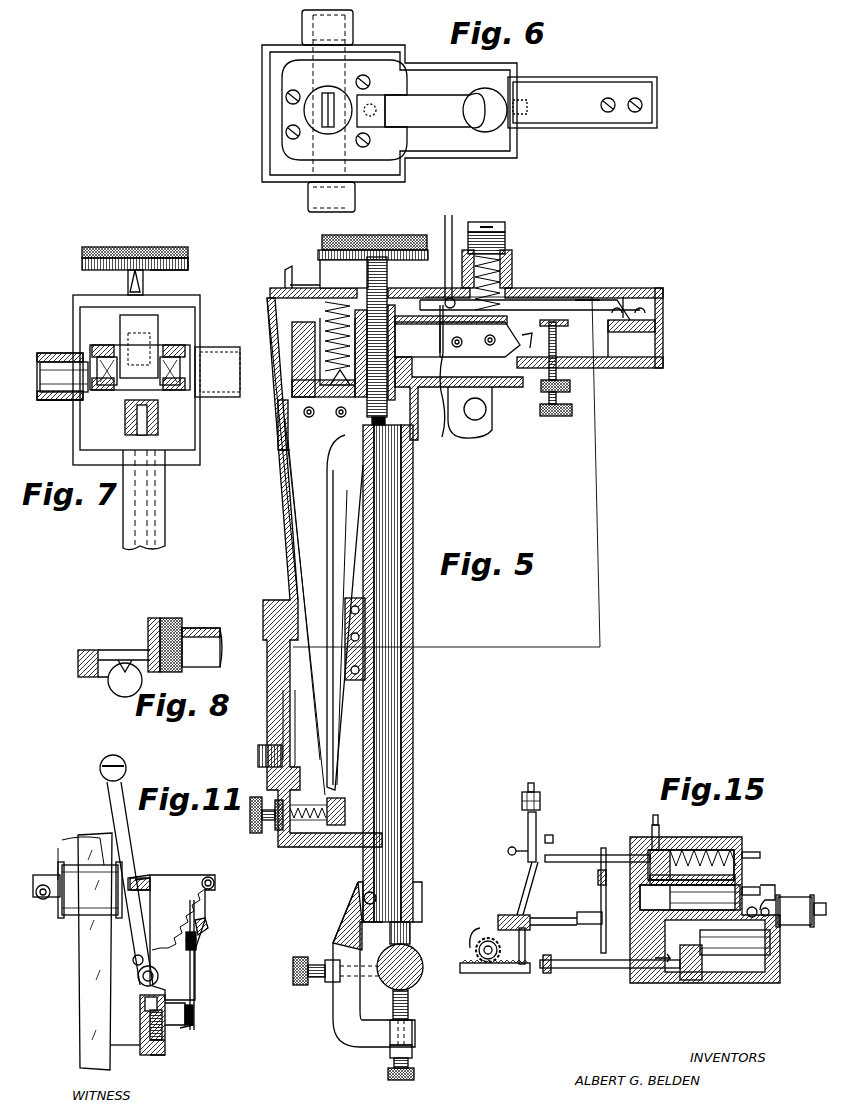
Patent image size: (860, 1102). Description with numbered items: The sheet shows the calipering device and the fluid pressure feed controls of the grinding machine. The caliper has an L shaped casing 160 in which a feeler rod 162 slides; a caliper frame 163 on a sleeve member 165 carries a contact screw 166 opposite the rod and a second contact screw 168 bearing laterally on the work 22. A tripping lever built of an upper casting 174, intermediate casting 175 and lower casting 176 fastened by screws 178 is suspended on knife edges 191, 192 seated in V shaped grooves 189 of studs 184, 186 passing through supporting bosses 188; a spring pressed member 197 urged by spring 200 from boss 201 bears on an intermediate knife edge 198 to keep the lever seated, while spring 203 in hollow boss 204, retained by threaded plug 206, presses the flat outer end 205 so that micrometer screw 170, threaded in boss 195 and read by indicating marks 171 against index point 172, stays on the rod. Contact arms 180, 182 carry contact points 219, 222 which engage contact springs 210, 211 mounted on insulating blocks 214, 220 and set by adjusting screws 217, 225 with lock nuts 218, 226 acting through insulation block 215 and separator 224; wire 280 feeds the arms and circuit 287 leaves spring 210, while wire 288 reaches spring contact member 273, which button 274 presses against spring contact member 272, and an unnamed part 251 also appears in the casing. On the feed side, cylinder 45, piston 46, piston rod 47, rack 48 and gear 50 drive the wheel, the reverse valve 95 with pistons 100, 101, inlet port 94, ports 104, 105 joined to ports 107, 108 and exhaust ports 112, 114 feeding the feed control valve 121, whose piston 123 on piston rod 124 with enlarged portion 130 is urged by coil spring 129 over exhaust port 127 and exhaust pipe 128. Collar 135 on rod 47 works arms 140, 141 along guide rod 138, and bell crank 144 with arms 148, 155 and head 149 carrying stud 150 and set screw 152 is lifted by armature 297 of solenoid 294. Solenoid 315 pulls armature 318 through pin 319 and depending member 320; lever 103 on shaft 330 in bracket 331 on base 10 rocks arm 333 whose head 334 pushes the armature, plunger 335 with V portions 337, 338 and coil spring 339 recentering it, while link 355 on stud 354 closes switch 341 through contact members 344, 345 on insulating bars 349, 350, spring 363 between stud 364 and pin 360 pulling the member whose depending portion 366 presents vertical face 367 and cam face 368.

In FIG. 11, the base 10 is at (88, 1045).
In FIG. 5, the work 22 is at (408, 972).
In FIG. 15, the wheel feed cylinder 45 is at (750, 983).
In FIG. 15, the piston 46 is at (688, 980).
In FIG. 15, the piston rod 47 is at (608, 968).
In FIG. 15, the rack 48 is at (508, 968).
In FIG. 15, the gear 50 is at (472, 945).
In FIG. 15, the port 94 is at (655, 897).
In FIG. 15, the reverse valve 95 is at (748, 888).
In FIG. 15, the piston 100 is at (688, 899).
In FIG. 15, the piston 101 is at (752, 913).
In FIG. 11, the lever 103 is at (112, 792).
In FIG. 15, the port 104 is at (630, 915).
In FIG. 15, the port 105 is at (710, 925).
In FIG. 15, the port 107 is at (750, 938).
In FIG. 15, the port 108 is at (660, 951).
In FIG. 15, the exhaust port 112 is at (598, 875).
In FIG. 15, the exhaust port 114 is at (742, 878).
In FIG. 15, the feed control valve 121 is at (732, 845).
In FIG. 15, the piston 123 is at (665, 855).
In FIG. 15, the piston rod 124 is at (760, 852).
In FIG. 15, the exhaust port 127 is at (652, 840).
In FIG. 15, the exhaust pipe 128 is at (655, 815).
In FIG. 15, the coil spring 129 is at (695, 852).
In FIG. 15, the enlarged portion 130 is at (640, 853).
In FIG. 15, the collar 135 is at (548, 973).
In FIG. 15, the guide rod 138 is at (556, 910).
In FIG. 15, the depending arm 140 is at (603, 948).
In FIG. 15, the upstanding arm 141 is at (601, 884).
In FIG. 15, the bell crank 144 is at (505, 915).
In FIG. 15, the arm 148 is at (527, 882).
In FIG. 15, the head 149 is at (528, 840).
In FIG. 15, the stud 150 is at (550, 837).
In FIG. 15, the set screw 152 is at (508, 852).
In FIG. 15, the depending arm 155 is at (525, 945).
In FIG. 5, the casing 160 is at (290, 562).
In FIG. 5, the feeler rod 162 is at (395, 703).
In FIG. 5, the caliper frame 163 is at (348, 910).
In FIG. 5, the sleeve member 165 is at (382, 860).
In FIG. 5, the contact screw 166 is at (388, 1073).
In FIG. 5, the contact screw 168 is at (293, 971).
In FIG. 7, the micrometer screw 170 is at (134, 247).
In FIG. 5, the micrometer screw 170 is at (385, 228).
In FIG. 7, the indicating marks 171 is at (168, 270).
In FIG. 5, the indicating marks 171 is at (402, 256).
In FIG. 7, the index point 172 is at (128, 285).
In FIG. 5, the index point 172 is at (300, 273).
In FIG. 5, the upper casting 174 is at (292, 330).
In FIG. 5, the intermediate casting 175 is at (292, 348).
In FIG. 8, the intermediate casting 175 is at (78, 660).
In FIG. 5, the lower casting 176 is at (300, 378).
In FIG. 6, the screws 178 is at (364, 78).
In FIG. 5, the contact arm 180 is at (470, 348).
In FIG. 7, the contact arm 182 is at (143, 445).
In FIG. 5, the contact arm 182 is at (310, 511).
In FIG. 6, the stud 184 is at (320, 30).
In FIG. 7, the stud 184 is at (62, 372).
In FIG. 8, the stud 184 is at (128, 688).
In FIG. 6, the stud 186 is at (335, 197).
In FIG. 7, the stud 186 is at (213, 372).
In FIG. 5, the stud 186 is at (304, 412).
In FIG. 6, the supporting bosses 188 is at (302, 41).
In FIG. 7, the supporting bosses 188 is at (55, 402).
In FIG. 5, the supporting bosses 188 is at (336, 412).
In FIG. 8, the V shaped groove 189 is at (118, 678).
In FIG. 7, the knife edge 191 is at (107, 368).
In FIG. 8, the knife edge 191 is at (125, 666).
In FIG. 7, the knife edge 192 is at (177, 365).
In FIG. 6, the boss 195 is at (373, 104).
In FIG. 5, the boss 195 is at (417, 339).
In FIG. 8, the boss 195 is at (182, 625).
In FIG. 5, the spring pressed member 197 is at (285, 425).
In FIG. 5, the intermediate knife edge 198 is at (282, 452).
In FIG. 5, the spring 200 is at (325, 318).
In FIG. 5, the boss 201 is at (353, 337).
In FIG. 5, the spring 203 is at (512, 272).
In FIG. 5, the hollow boss 204 is at (508, 250).
In FIG. 6, the flat outer end 205 is at (485, 115).
In FIG. 5, the flat outer end 205 is at (507, 310).
In FIG. 5, the threaded plug 206 is at (505, 228).
In FIG. 5, the contact spring 210 is at (558, 320).
In FIG. 5, the contact spring 211 is at (347, 743).
In FIG. 5, the insulating block 214 is at (665, 321).
In FIG. 5, the insulation block 215 is at (558, 328).
In FIG. 5, the adjusting screw 217 is at (556, 416).
In FIG. 5, the lock nut 218 is at (541, 388).
In FIG. 5, the contact point 219 is at (527, 348).
In FIG. 5, the insulating block 220 is at (372, 620).
In FIG. 5, the contact point 222 is at (340, 783).
In FIG. 5, the insulating separator 224 is at (340, 815).
In FIG. 5, the adjusting screw 225 is at (256, 833).
In FIG. 5, the lock nut 226 is at (280, 831).
In FIG. 5, the ring 251 is at (490, 422).
In FIG. 5, the spring contact member 272 is at (283, 716).
In FIG. 5, the spring contact member 273 is at (294, 731).
In FIG. 5, the insulating button 274 is at (258, 754).
In FIG. 5, the wire 280 is at (452, 215).
In FIG. 5, the circuit 287 is at (456, 240).
In FIG. 5, the wire 288 is at (597, 503).
In FIG. 15, the solenoid 294 is at (540, 801).
In FIG. 15, the armature 297 is at (534, 786).
In FIG. 11, the solenoid 315 is at (98, 840).
In FIG. 15, the solenoid 315 is at (795, 900).
In FIG. 11, the armature 318 is at (60, 848).
In FIG. 15, the armature 318 is at (820, 915).
In FIG. 11, the pin 319 is at (46, 900).
In FIG. 11, the depending member 320 is at (40, 875).
In FIG. 15, the depending member 320 is at (772, 892).
In FIG. 11, the shaft 330 is at (140, 990).
In FIG. 11, the bracket 331 is at (124, 1050).
In FIG. 11, the arm 333 is at (163, 915).
In FIG. 11, the head 334 is at (160, 880).
In FIG. 11, the spring pressed plunger 335 is at (162, 1025).
In FIG. 11, the inverted V portion 337 is at (185, 1005).
In FIG. 11, the V portion 338 is at (148, 1000).
In FIG. 11, the coil spring 339 is at (162, 1048).
In FIG. 11, the switch 341 is at (202, 980).
In FIG. 11, the contact member 344 is at (196, 947).
In FIG. 11, the contact member 345 is at (193, 1010).
In FIG. 11, the insulating bar 349 is at (196, 936).
In FIG. 11, the insulating bar 350 is at (193, 1025).
In FIG. 11, the stud 354 is at (208, 925).
In FIG. 11, the link 355 is at (205, 903).
In FIG. 11, the pin 360 is at (214, 884).
In FIG. 11, the coil spring 363 is at (150, 945).
In FIG. 11, the stud 364 is at (138, 961).
In FIG. 11, the depending portion 366 is at (150, 876).
In FIG. 11, the vertical face 367 is at (135, 878).
In FIG. 11, the cam face 368 is at (140, 875).